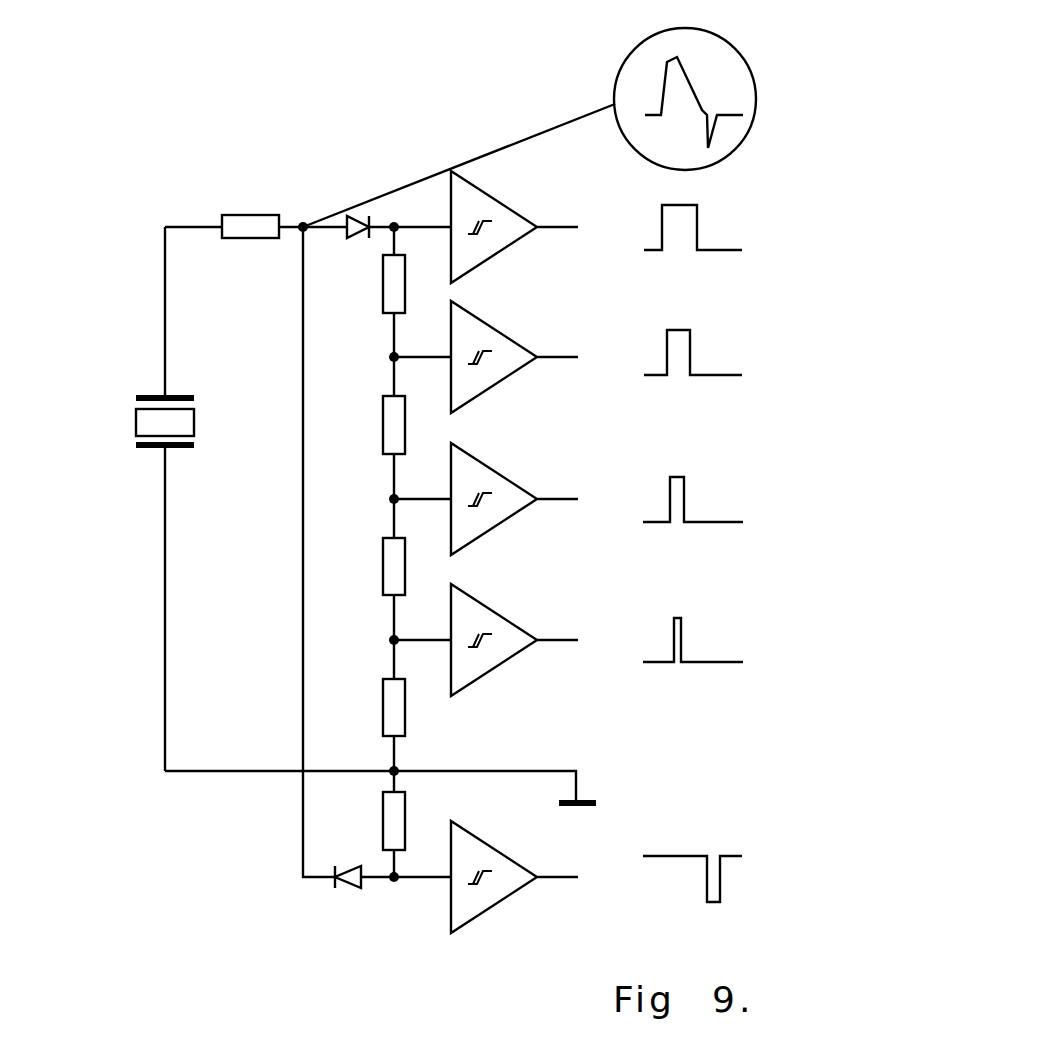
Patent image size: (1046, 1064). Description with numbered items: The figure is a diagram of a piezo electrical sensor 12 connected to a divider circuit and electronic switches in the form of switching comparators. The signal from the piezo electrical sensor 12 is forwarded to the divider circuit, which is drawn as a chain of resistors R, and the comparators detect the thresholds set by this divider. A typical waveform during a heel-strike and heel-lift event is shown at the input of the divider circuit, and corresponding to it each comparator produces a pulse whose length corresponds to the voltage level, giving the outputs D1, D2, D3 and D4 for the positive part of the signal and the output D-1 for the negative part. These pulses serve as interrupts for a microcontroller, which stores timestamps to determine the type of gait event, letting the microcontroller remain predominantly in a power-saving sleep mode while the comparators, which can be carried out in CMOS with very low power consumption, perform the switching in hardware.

The piezo electrical sensor 12 is at (138, 375).
The resistor R is at (313, 532).
The first detector output D1 is at (596, 227).
The second detector output D2 is at (596, 357).
The third detector output D3 is at (597, 499).
The fourth detector output D4 is at (597, 640).
The negative detector output D-1 is at (596, 877).